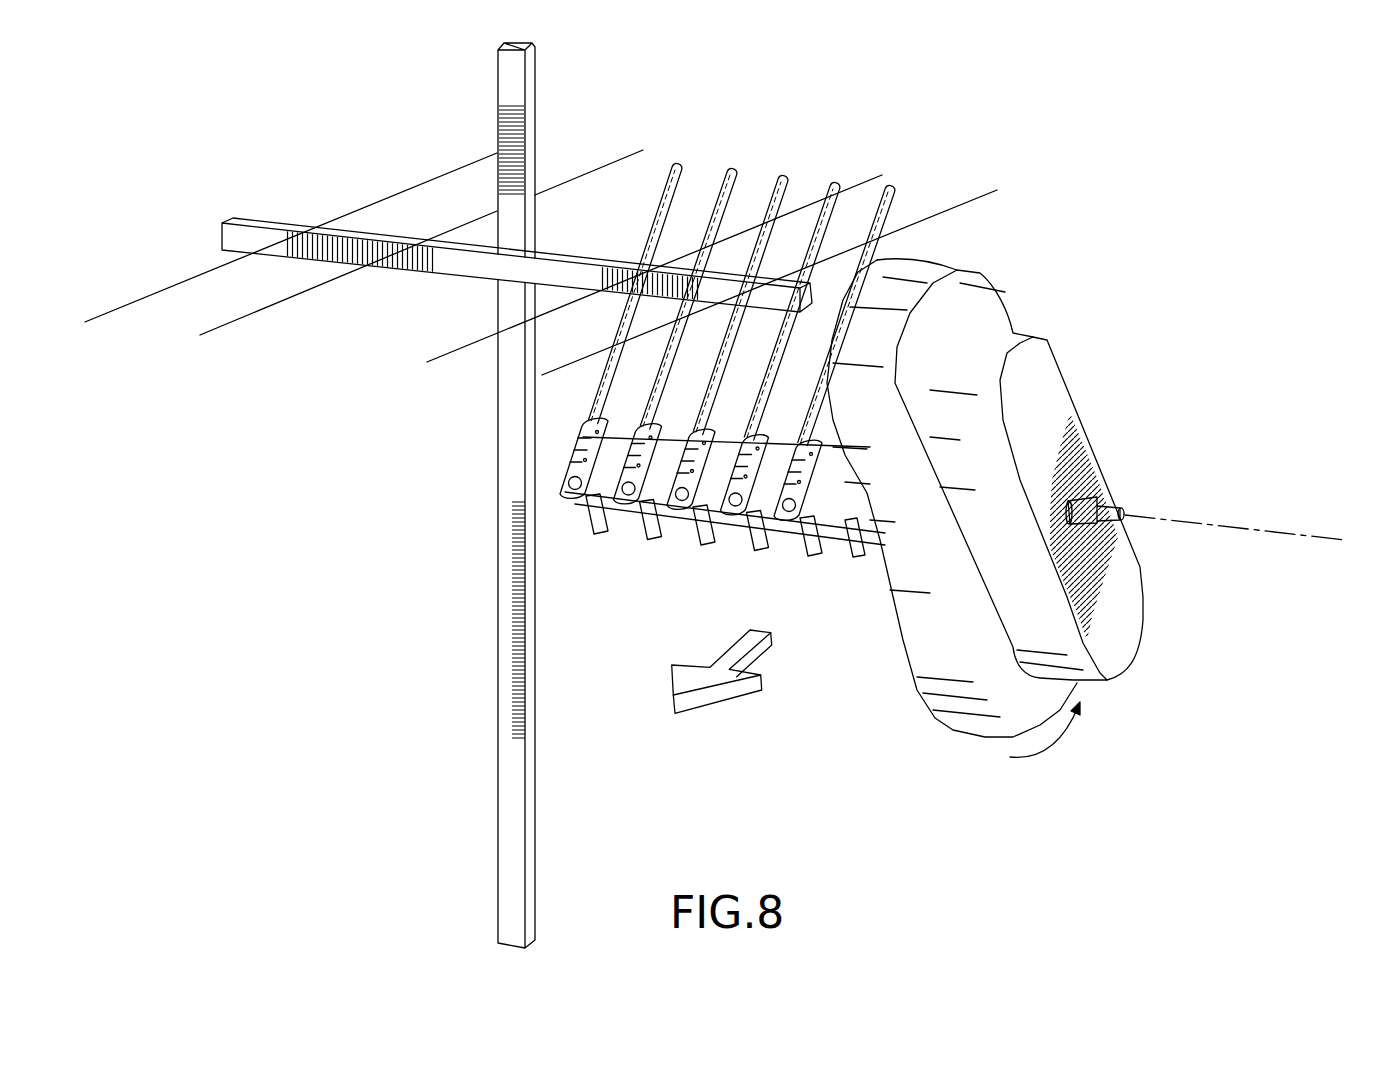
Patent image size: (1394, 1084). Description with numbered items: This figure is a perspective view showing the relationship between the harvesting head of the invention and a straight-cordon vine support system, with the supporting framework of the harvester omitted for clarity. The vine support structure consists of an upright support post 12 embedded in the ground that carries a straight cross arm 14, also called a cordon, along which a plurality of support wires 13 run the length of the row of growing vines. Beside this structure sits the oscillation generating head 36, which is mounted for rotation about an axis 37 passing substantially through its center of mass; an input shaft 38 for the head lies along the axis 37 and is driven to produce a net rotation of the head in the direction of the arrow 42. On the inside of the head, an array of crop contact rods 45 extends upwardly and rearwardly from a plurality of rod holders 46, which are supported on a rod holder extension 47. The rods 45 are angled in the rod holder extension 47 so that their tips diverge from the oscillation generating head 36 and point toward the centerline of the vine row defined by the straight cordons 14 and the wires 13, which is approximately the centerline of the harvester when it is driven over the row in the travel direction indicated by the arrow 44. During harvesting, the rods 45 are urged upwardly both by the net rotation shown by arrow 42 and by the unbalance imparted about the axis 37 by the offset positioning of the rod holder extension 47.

The upright support post 12 is at (497, 768).
The support wires 13 is at (628, 155).
The straight cross arm 14 is at (568, 257).
The oscillation generating head 36 is at (997, 290).
The axis 37 is at (1210, 525).
The input shaft 38 is at (1087, 500).
The arrow 42 is at (1047, 750).
The arrow 44 is at (722, 652).
The crop contact rods 45 is at (783, 180).
The rod holders 46 is at (586, 428).
The rod holder extension 47 is at (832, 522).